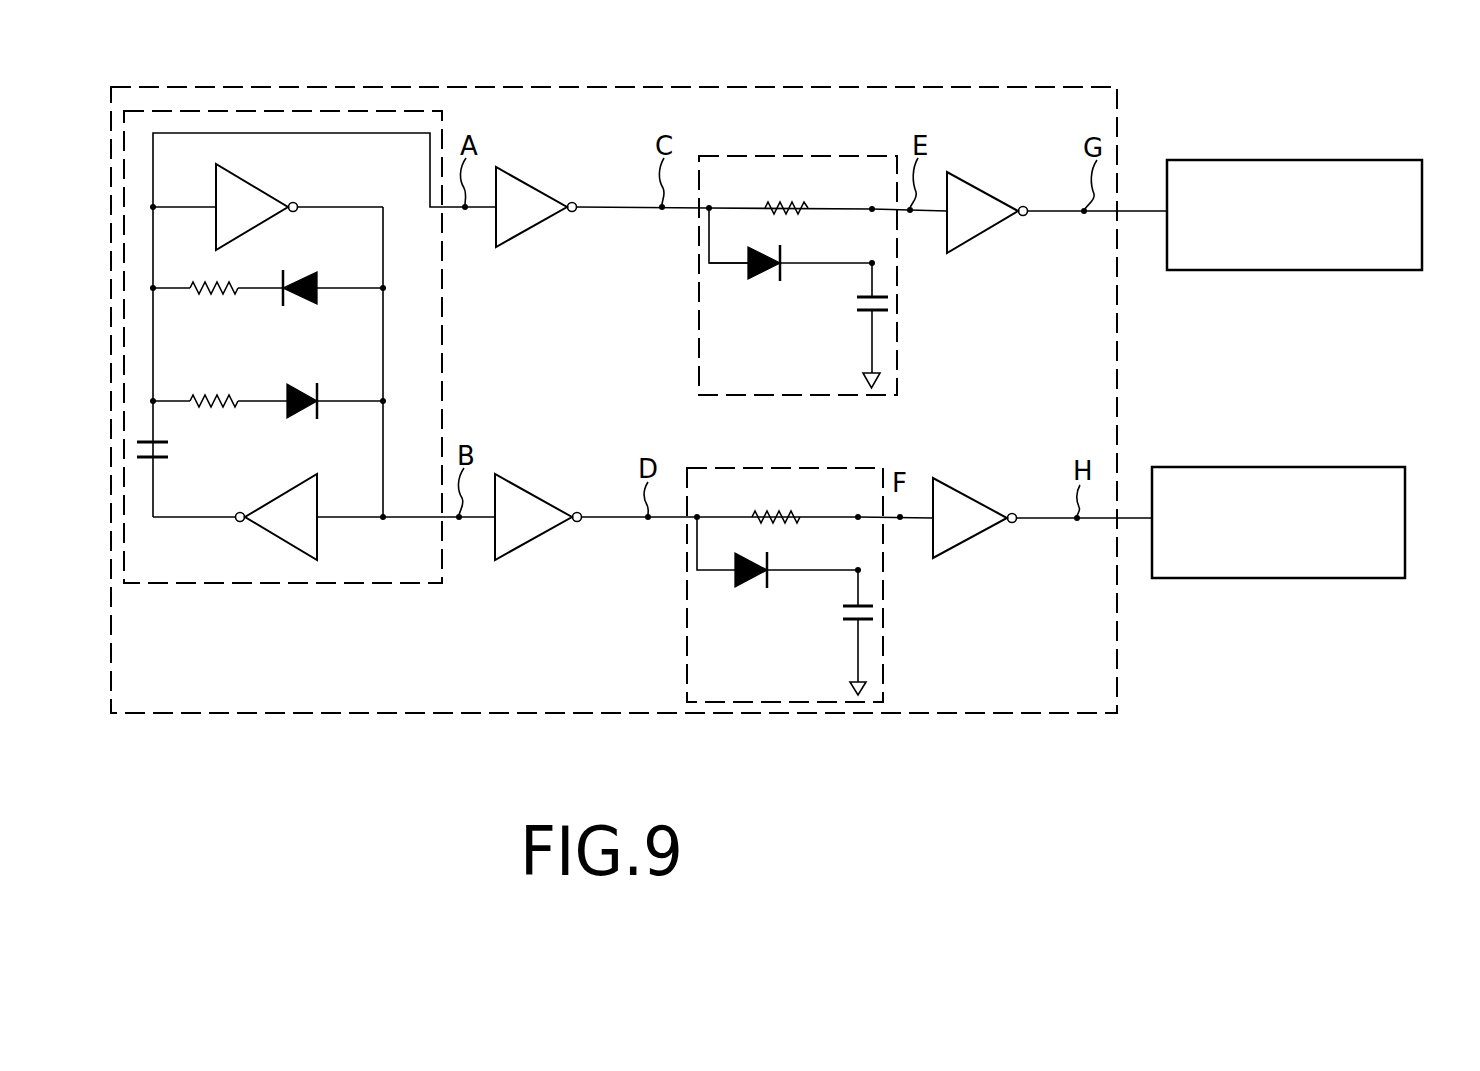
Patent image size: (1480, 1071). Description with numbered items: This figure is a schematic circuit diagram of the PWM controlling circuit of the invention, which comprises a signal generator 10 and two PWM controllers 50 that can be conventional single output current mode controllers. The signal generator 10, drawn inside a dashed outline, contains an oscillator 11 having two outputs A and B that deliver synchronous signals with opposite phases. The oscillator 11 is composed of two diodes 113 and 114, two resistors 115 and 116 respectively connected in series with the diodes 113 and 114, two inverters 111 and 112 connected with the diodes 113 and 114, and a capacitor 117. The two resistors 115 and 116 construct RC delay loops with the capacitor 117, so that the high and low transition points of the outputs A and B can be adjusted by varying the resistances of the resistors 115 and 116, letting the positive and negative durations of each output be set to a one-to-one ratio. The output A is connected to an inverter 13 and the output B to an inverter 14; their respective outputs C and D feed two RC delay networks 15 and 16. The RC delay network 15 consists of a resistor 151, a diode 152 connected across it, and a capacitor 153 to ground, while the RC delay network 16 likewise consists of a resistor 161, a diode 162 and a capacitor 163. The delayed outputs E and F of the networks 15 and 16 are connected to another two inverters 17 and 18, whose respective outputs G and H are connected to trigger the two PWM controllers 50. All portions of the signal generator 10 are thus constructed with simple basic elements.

The signal generator 10 is at (399, 86).
The oscillator 11 is at (280, 585).
The inverter 111 is at (268, 196).
The inverter 112 is at (280, 496).
The diode 113 is at (316, 275).
The diode 114 is at (308, 385).
The resistor 115 is at (217, 275).
The resistor 116 is at (214, 382).
The capacitor 117 is at (174, 456).
The inverter 13 is at (541, 191).
The inverter 14 is at (540, 498).
The RC delay network 15 is at (897, 372).
The resistor 151 is at (790, 191).
The diode 152 is at (765, 282).
The capacitor 153 is at (865, 320).
The RC delay network 16 is at (883, 677).
The resistor 161 is at (776, 500).
The diode 162 is at (760, 590).
The capacitor 163 is at (840, 637).
The inverter 17 is at (988, 194).
The inverter 18 is at (982, 505).
The PWM controller 50 is at (1413, 252).